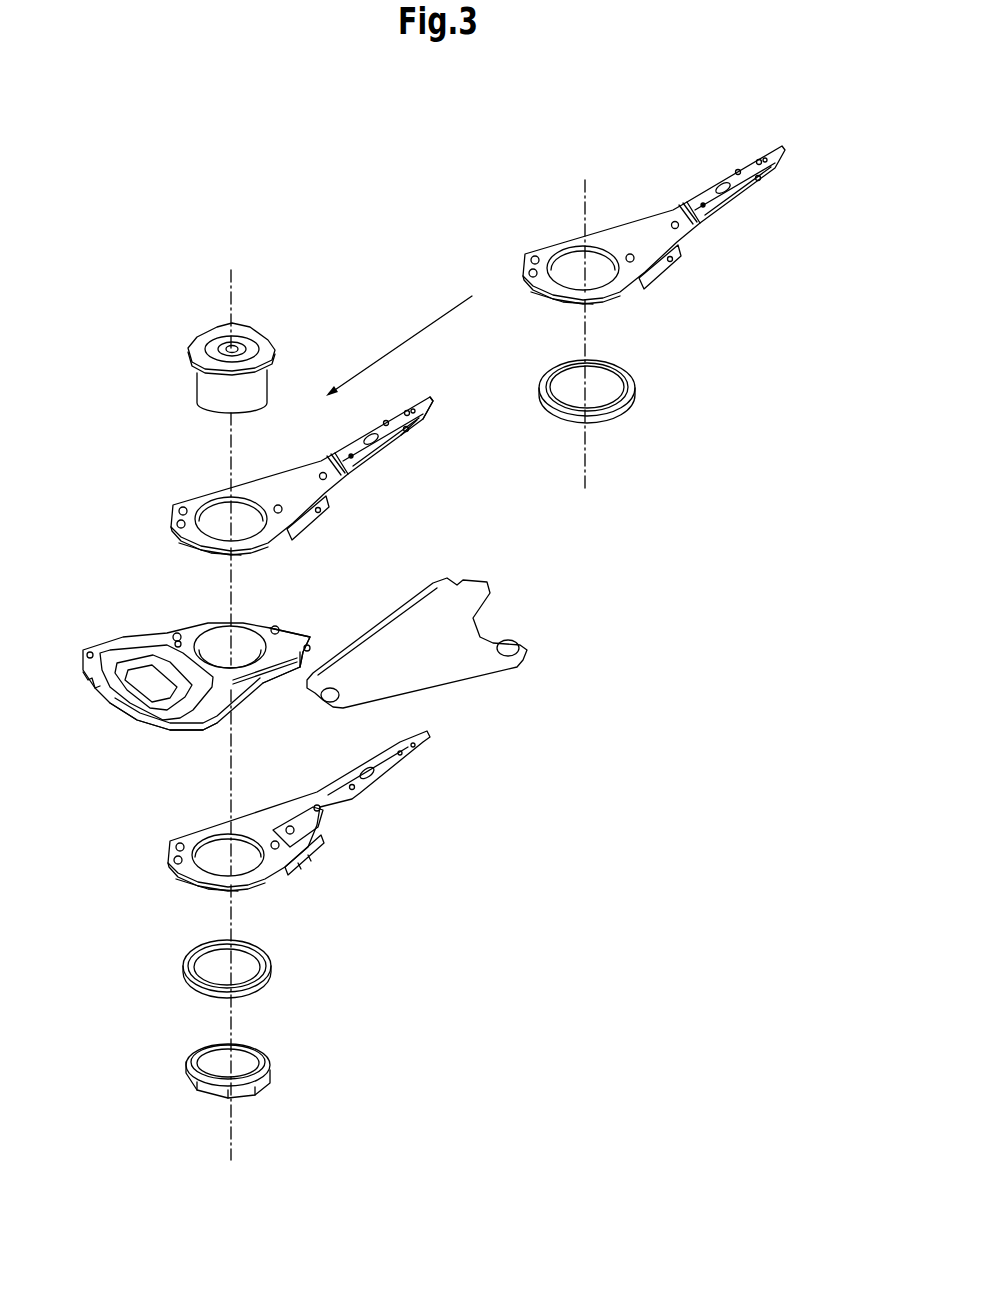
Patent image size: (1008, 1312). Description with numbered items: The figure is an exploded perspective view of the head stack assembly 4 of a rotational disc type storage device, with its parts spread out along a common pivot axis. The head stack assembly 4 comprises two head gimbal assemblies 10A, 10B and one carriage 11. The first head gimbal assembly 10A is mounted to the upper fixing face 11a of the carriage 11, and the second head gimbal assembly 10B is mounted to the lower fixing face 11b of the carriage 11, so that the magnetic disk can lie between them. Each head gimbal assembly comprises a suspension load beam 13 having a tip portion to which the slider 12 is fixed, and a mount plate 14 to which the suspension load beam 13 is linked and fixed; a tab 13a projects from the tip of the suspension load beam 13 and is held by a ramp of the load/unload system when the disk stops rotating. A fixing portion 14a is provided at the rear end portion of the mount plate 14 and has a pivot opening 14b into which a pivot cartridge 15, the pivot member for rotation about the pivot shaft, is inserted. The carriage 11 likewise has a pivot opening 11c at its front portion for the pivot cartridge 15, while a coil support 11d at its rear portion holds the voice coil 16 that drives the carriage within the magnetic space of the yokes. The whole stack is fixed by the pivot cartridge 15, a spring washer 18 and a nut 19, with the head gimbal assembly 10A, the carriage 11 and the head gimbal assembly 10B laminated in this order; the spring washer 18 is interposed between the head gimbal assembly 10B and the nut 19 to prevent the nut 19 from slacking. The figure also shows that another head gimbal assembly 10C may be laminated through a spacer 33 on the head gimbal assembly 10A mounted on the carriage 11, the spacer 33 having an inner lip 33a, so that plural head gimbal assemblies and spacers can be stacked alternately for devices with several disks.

The head stack assembly 4 is at (203, 210).
The first head gimbal assembly 10A is at (511, 489).
The second head gimbal assembly 10B is at (355, 821).
The another head gimbal assembly 10C is at (490, 542).
The carriage 11 is at (288, 675).
The upper fixing face 11a is at (217, 622).
The lower fixing face 11b is at (266, 686).
The pivot opening 11c is at (268, 648).
The coil support 11d is at (203, 715).
The slider 12 is at (585, 458).
The suspension load beam 13 is at (589, 489).
The tab 13a is at (628, 441).
The mount plate 14 is at (417, 550).
The fixing portion 14a is at (396, 562).
The pivot opening 14b is at (392, 515).
The pivot cartridge 15 is at (260, 338).
The voice coil 16 is at (120, 655).
The spring washer 18 is at (271, 964).
The nut 19 is at (271, 1070).
The spacer 33 is at (622, 373).
The inner lip of spacer ring 33a is at (573, 370).